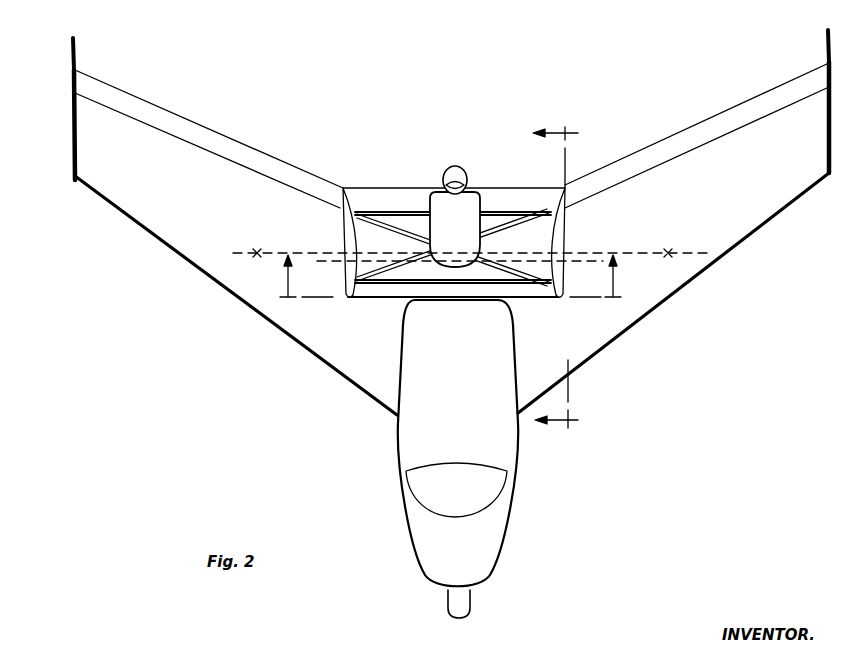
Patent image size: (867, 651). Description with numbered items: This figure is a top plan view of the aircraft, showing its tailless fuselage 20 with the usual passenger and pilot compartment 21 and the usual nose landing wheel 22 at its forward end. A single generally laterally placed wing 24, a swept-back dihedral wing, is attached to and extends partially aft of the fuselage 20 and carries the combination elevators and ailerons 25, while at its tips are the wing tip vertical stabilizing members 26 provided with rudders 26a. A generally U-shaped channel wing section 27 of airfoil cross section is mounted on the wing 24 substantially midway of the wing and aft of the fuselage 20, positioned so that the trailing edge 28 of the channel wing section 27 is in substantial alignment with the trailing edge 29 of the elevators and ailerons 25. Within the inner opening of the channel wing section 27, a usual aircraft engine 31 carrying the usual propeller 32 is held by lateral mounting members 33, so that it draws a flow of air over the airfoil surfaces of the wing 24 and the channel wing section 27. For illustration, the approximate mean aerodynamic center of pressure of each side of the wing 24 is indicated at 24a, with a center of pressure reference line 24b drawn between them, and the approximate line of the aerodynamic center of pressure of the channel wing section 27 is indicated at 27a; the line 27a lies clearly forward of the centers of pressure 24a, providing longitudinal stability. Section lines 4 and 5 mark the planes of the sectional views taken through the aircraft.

The section line 4- 4 is at (562, 277).
The section line 5- 5 is at (450, 291).
The tailless fuselage 20 is at (530, 472).
The passenger and pilot compartment 21 is at (425, 486).
The nose landing wheel 22 is at (450, 605).
The single generally laterally placed wing 24 is at (168, 222).
The approximate mean aerodynamic center of pressure 24a is at (257, 259).
The center of pressure reference line 24b is at (322, 252).
The combination elevators and ailerons 25 is at (165, 113).
The wing tip vertical stabilizing members 26 is at (78, 138).
The rudders 26a is at (76, 52).
The channel wing section 27 is at (343, 232).
The line of aerodynamic center of pressure of the channel wing section 27a is at (335, 263).
The trailing edge of channel wing section 28 is at (367, 188).
The trailing edge of elevators and ailerons 29 is at (223, 133).
The aircraft engine 31 is at (438, 218).
The propeller 32 is at (458, 176).
The lateral mounting members 33 is at (520, 215).